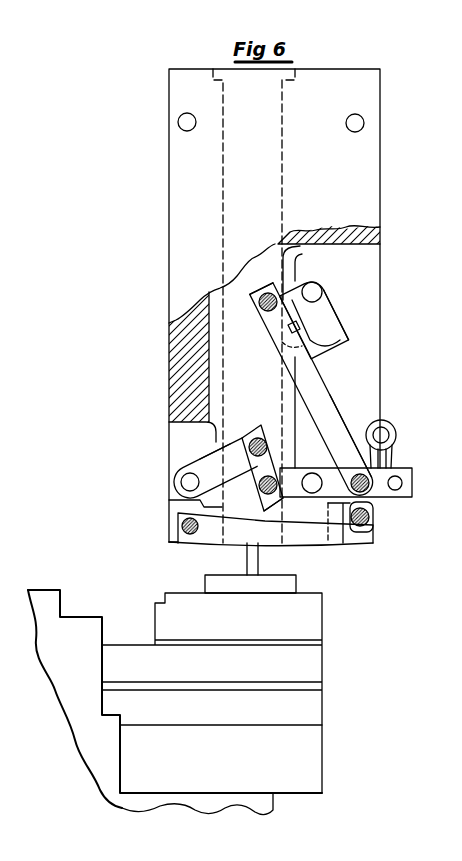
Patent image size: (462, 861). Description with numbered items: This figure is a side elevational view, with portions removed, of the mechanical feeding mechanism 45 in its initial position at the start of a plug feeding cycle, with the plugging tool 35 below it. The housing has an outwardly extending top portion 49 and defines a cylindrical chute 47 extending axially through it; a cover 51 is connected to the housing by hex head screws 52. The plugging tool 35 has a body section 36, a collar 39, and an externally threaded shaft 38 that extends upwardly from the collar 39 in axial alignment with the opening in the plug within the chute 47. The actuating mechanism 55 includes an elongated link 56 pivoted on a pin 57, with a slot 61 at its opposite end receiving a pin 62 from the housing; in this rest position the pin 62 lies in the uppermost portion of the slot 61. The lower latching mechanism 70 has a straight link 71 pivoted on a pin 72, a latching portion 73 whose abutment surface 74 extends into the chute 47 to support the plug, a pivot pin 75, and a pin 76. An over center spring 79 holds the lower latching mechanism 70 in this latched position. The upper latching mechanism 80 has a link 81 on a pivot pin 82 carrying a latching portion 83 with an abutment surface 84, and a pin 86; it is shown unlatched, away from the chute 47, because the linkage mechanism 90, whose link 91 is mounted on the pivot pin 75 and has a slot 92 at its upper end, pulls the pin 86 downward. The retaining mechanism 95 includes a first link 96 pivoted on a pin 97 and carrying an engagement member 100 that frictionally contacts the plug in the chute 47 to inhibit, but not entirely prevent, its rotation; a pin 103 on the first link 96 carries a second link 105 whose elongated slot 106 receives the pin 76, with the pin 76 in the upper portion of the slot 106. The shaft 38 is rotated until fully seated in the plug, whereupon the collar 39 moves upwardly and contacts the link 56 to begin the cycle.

The plugging tool 35 is at (326, 711).
The body section 36 is at (318, 764).
The shaft 38 is at (260, 561).
The collar 39 is at (298, 581).
The mechanical feeding mechanism 45 is at (383, 94).
The chute 47 is at (283, 121).
The top portion 49 is at (380, 234).
The cover 51 is at (332, 175).
The hex head screws 52 is at (364, 123).
The actuating mechanism 55 is at (222, 549).
The link 56 is at (178, 526).
The pin 57 is at (186, 536).
The slot 61 is at (374, 531).
The pin 62 is at (372, 514).
The lower latching mechanism 70 is at (364, 467).
The link 71 is at (412, 492).
The pin 72 is at (313, 494).
The latching portion 73 is at (358, 493).
The abutment surface 74 is at (402, 479).
The pivot pin 75 is at (349, 428).
The pin 76 is at (262, 487).
The over center spring 79 is at (389, 422).
The upper latching mechanism 80 is at (334, 296).
The link 81 is at (303, 282).
The pivot pin 82 is at (319, 284).
The latching portion 83 is at (341, 313).
The abutment surface 84 is at (290, 330).
The pin 86 is at (254, 300).
The linkage mechanism 90 is at (311, 389).
The link 91 is at (319, 393).
The slot 92 is at (268, 318).
The retaining mechanism 95 is at (184, 455).
The first link 96 is at (215, 461).
The pin 97 is at (181, 479).
The engagement member 100 is at (182, 503).
The pin 103 is at (250, 440).
The second link 105 is at (306, 506).
The elongated slot 106 is at (266, 498).